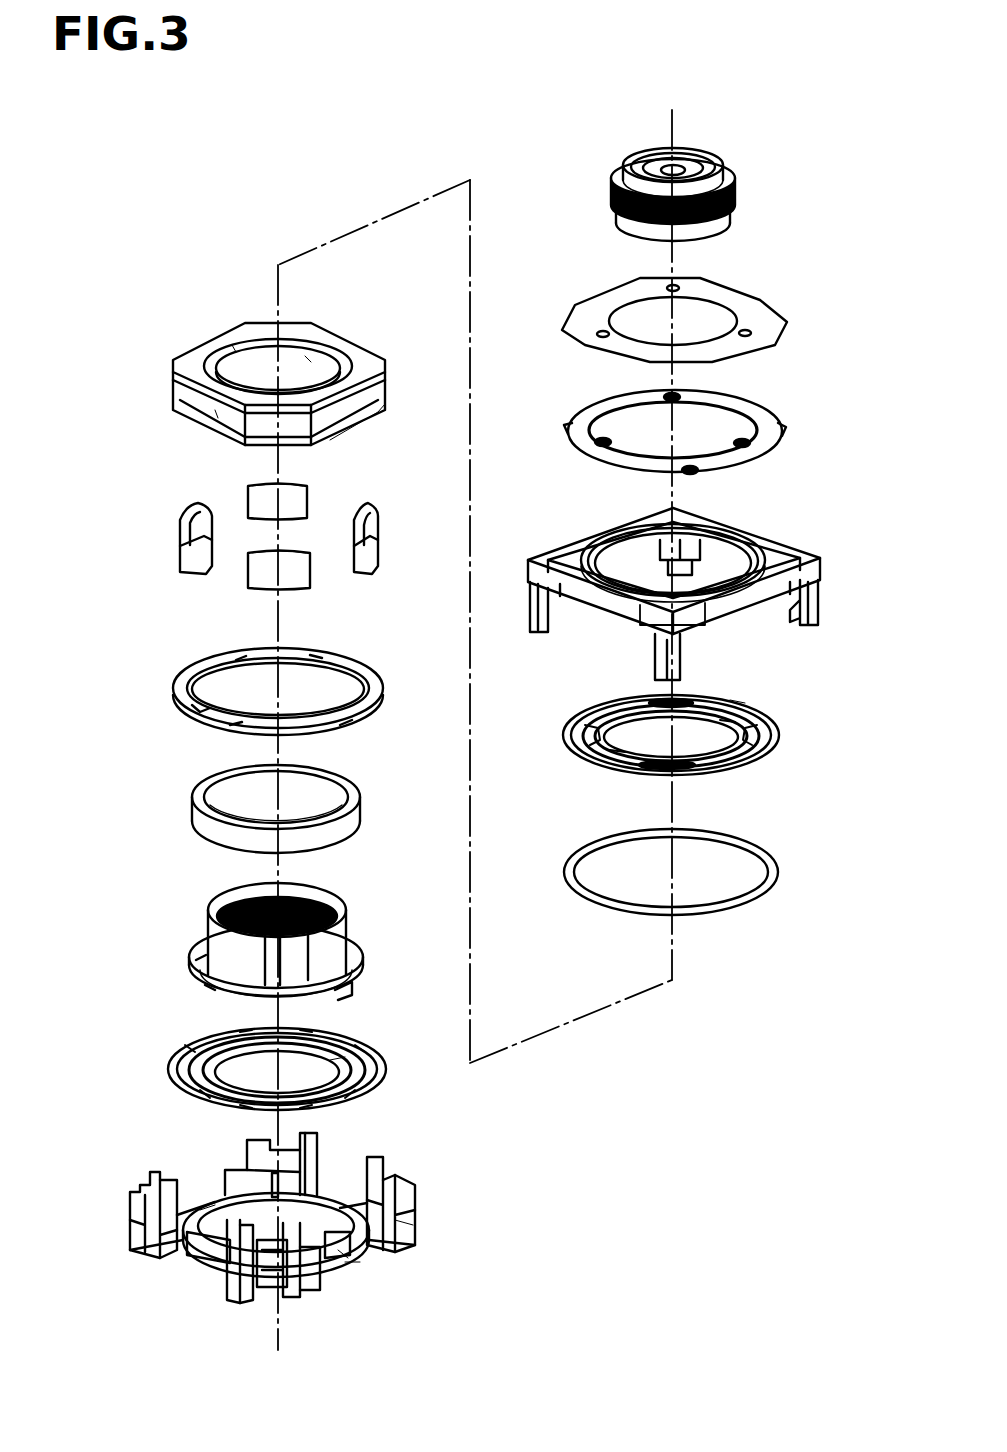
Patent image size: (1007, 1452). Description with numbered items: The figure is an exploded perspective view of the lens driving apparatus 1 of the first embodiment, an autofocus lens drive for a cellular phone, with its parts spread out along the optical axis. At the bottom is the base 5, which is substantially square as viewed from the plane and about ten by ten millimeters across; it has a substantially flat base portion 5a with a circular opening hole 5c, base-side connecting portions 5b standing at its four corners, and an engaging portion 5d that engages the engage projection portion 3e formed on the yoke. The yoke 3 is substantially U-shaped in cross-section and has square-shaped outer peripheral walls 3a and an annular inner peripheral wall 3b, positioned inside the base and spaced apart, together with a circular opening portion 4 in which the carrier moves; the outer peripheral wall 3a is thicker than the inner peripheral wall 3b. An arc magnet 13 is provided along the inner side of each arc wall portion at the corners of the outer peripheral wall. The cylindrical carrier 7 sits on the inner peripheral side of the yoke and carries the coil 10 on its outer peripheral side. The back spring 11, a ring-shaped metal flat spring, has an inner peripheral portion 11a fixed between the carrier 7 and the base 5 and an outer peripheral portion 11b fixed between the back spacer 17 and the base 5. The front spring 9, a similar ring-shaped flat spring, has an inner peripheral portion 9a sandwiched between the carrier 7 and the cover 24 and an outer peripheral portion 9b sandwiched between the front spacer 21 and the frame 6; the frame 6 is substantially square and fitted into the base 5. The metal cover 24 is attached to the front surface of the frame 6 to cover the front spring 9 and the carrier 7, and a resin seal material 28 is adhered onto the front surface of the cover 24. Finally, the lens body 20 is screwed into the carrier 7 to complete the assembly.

The lens driving apparatus 1 is at (800, 140).
The yoke 3 is at (183, 398).
The outer peripheral wall 3a is at (218, 412).
The inner peripheral wall 3b is at (236, 352).
The engage projection portion 3e is at (368, 432).
The opening portion 4 is at (310, 360).
The base 5 is at (196, 1270).
The base portion 5a is at (207, 1210).
The base-side connecting portion 5b is at (405, 1225).
The opening hole 5c is at (346, 1256).
The engaging portion 5d is at (360, 1262).
The frame 6 is at (735, 530).
The carrier 7 is at (205, 932).
The front spring 9 is at (785, 735).
The inner peripheral portion 9a is at (588, 752).
The outer peripheral portion 9b is at (742, 703).
The coil 10 is at (190, 815).
The back spring 11 is at (170, 1080).
The inner peripheral portion 11a is at (336, 1086).
The outer peripheral portion 11b is at (362, 1058).
The arc magnet 13 is at (178, 547).
The back spacer 17 is at (176, 690).
The lens body 20 is at (736, 212).
The front spacer 21 is at (778, 873).
The cover 24 is at (728, 400).
The seal material 28 is at (758, 292).